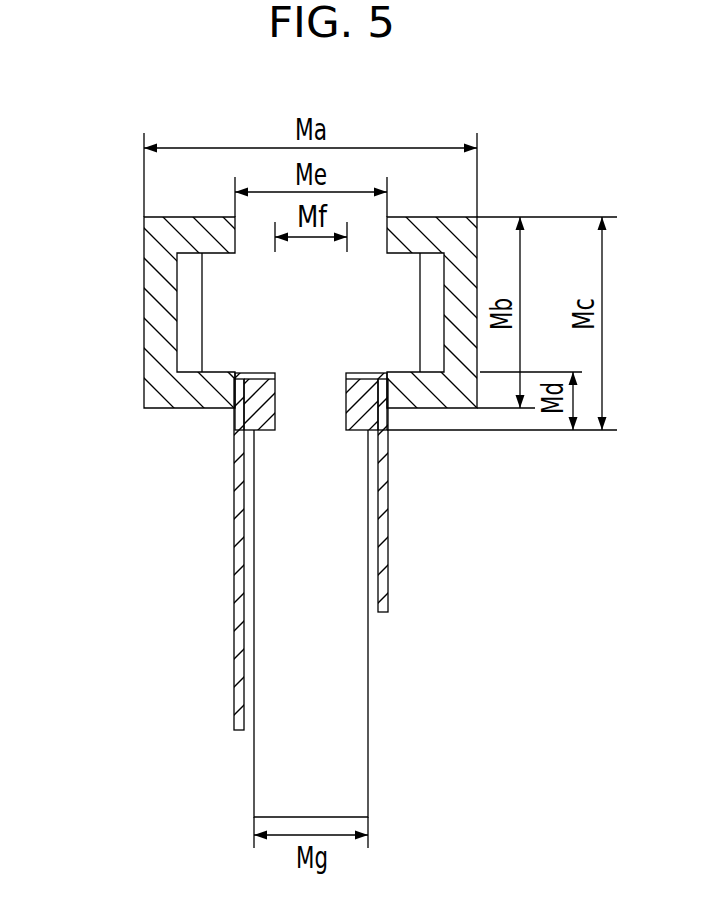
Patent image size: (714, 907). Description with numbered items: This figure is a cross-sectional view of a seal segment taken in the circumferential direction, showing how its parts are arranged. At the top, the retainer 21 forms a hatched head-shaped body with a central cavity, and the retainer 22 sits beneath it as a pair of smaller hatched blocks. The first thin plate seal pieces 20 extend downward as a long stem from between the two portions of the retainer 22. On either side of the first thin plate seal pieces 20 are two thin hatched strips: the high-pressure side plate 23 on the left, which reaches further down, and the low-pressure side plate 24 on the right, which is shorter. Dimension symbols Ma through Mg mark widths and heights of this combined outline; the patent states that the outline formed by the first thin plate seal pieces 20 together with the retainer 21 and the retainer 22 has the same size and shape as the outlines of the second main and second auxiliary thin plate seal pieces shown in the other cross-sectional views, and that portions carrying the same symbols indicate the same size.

The first thin plate seal piece 20 is at (267, 779).
The retainer 21 is at (144, 267).
The retainer 22 is at (458, 410).
The high-pressure side plate 23 is at (234, 522).
The low-pressure side plate 24 is at (388, 498).